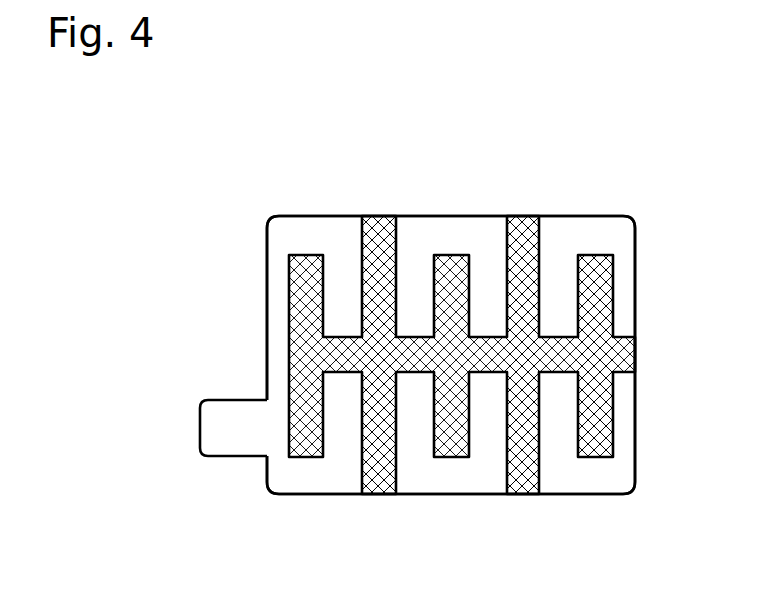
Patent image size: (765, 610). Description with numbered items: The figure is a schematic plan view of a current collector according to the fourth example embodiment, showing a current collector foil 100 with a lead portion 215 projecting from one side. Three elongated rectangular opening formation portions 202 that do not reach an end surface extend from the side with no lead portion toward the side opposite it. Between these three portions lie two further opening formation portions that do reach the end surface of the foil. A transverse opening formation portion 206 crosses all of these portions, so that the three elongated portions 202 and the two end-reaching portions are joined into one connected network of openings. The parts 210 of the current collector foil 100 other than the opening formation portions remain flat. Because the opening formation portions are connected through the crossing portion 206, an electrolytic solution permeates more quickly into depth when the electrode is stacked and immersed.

The current collector foil 100 is at (418, 53).
The parts other than the opening formation portions 210 is at (300, 227).
The lead portion 215 is at (217, 408).
The opening formation portion 206 is at (492, 360).
The opening formation portion 202 is at (595, 445).